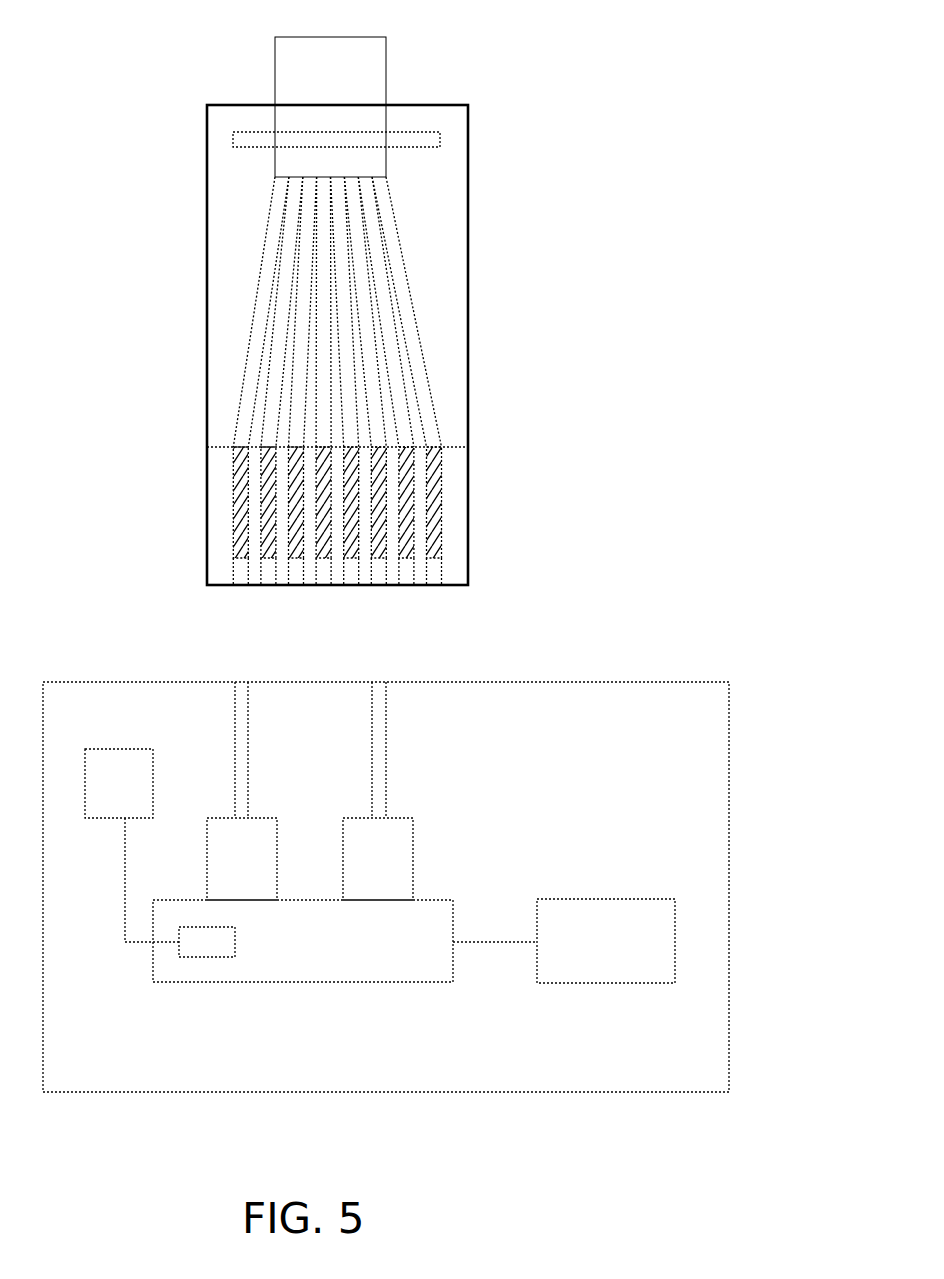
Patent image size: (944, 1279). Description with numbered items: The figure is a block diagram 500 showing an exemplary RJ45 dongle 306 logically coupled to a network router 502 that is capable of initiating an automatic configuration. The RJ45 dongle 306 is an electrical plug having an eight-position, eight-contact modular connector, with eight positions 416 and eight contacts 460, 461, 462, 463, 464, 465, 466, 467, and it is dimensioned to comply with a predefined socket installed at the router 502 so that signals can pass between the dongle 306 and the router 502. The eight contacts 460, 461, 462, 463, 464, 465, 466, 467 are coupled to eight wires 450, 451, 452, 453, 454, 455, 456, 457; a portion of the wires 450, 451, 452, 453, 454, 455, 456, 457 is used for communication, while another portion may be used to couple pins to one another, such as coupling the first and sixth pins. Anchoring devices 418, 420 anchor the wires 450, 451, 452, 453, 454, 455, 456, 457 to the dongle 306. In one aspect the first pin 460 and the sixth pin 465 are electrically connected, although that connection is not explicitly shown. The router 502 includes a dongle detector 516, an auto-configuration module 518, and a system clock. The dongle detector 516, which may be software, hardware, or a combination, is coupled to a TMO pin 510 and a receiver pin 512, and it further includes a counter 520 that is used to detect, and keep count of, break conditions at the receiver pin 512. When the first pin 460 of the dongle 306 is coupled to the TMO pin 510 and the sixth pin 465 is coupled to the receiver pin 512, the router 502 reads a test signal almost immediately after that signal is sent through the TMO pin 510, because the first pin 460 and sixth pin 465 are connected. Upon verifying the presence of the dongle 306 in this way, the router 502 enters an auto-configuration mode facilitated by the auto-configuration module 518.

The block diagram 500 is at (654, 44).
The RJ45 dongle 306 is at (135, 381).
The anchoring device 420 is at (311, 85).
The anchoring device 418 is at (411, 133).
The wire 450 is at (268, 243).
The wire 451 is at (286, 291).
The wire 452 is at (302, 344).
The wire 453 is at (326, 437).
The wire 454 is at (351, 435).
The wire 455 is at (372, 350).
The wire 456 is at (382, 291).
The wire 457 is at (392, 251).
The first pin 460 is at (236, 471).
The contact 461 is at (265, 505).
The contact 462 is at (290, 515).
The contact 463 is at (318, 528).
The contact 464 is at (352, 528).
The sixth pin 465 is at (382, 512).
The contact 466 is at (413, 503).
The contact 467 is at (441, 471).
The position 416 is at (282, 577).
The router 502 is at (577, 682).
The TMO pin 510 is at (223, 883).
The receiver pin 512 is at (359, 883).
The dongle detector 516 is at (299, 952).
The auto-configuration module 518 is at (587, 952).
The counter 520 is at (188, 952).